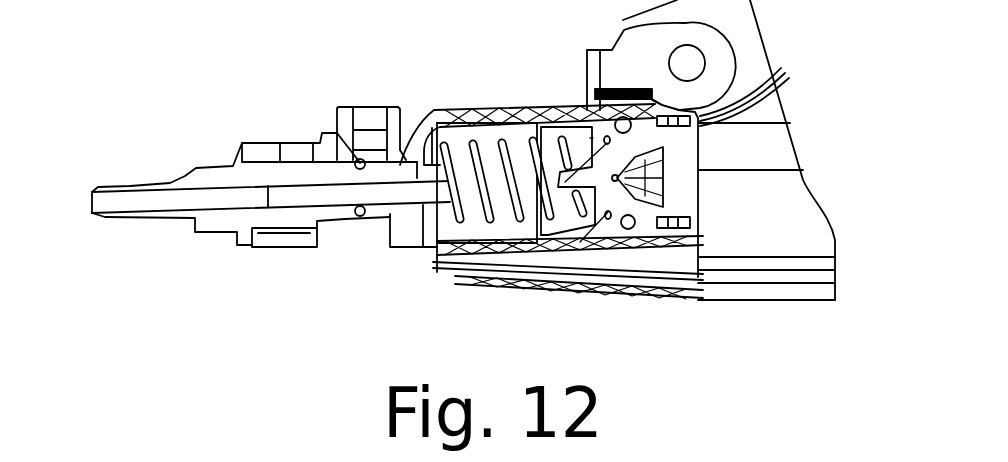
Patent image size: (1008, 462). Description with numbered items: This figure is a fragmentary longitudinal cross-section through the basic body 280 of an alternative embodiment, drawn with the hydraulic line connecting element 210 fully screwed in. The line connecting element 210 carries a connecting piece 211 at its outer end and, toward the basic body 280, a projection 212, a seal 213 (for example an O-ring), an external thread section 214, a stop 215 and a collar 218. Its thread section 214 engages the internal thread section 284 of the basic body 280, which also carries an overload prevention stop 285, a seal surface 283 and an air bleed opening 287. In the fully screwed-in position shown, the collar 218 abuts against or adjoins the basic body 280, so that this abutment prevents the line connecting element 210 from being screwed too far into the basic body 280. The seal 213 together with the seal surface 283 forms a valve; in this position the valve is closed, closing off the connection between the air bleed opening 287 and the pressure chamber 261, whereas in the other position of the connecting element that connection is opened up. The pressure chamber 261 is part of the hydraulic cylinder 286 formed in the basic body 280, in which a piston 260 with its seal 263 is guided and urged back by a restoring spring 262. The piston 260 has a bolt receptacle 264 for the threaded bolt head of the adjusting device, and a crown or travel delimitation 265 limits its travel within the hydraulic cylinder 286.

The line connecting element 210 is at (225, 218).
The connecting piece 211 is at (143, 213).
The projection 212 is at (423, 212).
The seal 213 is at (393, 212).
The thread section 214 is at (283, 160).
The stop 215 is at (316, 220).
The collar 218 is at (240, 160).
The piston 260 is at (608, 218).
The pressure chamber 261 is at (473, 230).
The restoring spring 262 is at (517, 205).
The seal 263 is at (627, 225).
The bolt receptacle 264 is at (680, 163).
The crown or travel delimitation 265 is at (428, 140).
The basic body 280 is at (545, 120).
The seal surface 283 is at (400, 163).
The thread section 284 is at (282, 232).
The overload prevention stop 285 is at (313, 135).
The hydraulic cylinder 286 is at (493, 112).
The air bleed opening 287 is at (358, 158).